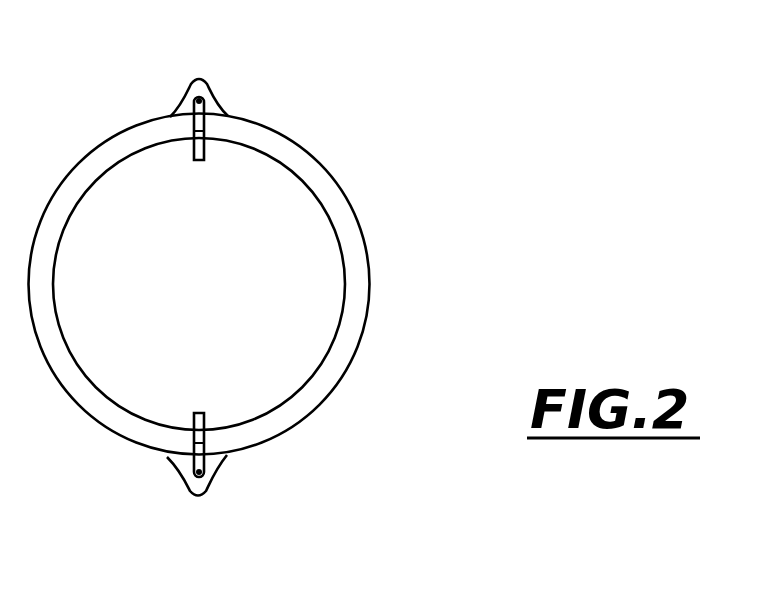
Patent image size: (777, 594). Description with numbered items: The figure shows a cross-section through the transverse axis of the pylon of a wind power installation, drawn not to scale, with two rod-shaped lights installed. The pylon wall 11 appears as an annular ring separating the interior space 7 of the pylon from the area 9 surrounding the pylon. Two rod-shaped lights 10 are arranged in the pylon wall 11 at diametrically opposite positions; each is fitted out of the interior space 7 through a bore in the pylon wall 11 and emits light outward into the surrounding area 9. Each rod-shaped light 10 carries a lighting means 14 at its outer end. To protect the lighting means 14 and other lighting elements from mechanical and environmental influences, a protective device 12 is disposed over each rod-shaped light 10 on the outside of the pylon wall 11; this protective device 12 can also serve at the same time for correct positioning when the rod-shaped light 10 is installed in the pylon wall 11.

The interior space 7 is at (216, 292).
The area surrounding the pylon 9 is at (417, 377).
The rod-shaped light 10 is at (204, 131).
The pylon wall 11 is at (354, 257).
The protective device 12 is at (207, 88).
The lighting means 14 is at (204, 101).